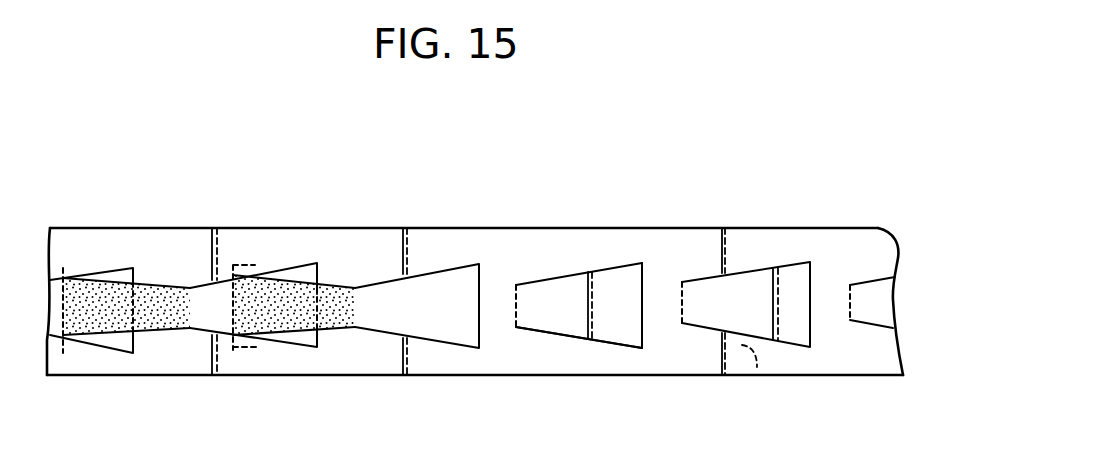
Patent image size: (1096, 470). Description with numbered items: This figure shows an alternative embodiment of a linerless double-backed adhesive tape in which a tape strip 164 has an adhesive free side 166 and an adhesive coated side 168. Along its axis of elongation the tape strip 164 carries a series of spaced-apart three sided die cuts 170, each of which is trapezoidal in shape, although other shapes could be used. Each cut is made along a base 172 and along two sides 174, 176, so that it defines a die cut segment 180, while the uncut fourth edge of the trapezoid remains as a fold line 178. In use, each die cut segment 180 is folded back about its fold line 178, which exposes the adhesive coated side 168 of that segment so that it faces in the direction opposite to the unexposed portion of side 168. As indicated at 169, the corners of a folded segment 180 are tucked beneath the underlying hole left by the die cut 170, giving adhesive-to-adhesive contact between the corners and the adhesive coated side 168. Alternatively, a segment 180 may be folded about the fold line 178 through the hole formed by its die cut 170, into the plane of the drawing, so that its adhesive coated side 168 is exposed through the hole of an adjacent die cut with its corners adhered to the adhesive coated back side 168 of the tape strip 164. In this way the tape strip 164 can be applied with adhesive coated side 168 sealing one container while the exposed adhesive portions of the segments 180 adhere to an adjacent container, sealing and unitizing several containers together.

The tape strip 164 is at (667, 228).
The adhesive free side 166 is at (765, 242).
The adhesive coated side 168 is at (252, 298).
The tucked corners 169 is at (240, 348).
The three sided die cut 170 is at (550, 290).
The base 172 is at (642, 327).
The side 174 is at (612, 265).
The side 176 is at (567, 335).
The fold line 178 is at (356, 308).
The die cut segment 180 is at (155, 333).